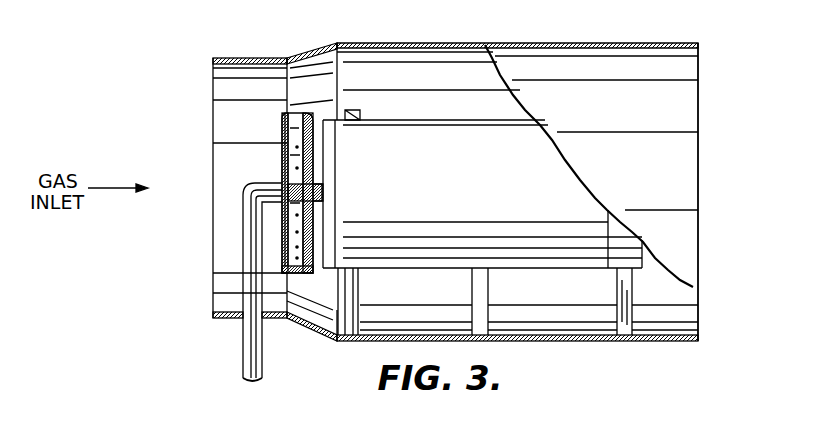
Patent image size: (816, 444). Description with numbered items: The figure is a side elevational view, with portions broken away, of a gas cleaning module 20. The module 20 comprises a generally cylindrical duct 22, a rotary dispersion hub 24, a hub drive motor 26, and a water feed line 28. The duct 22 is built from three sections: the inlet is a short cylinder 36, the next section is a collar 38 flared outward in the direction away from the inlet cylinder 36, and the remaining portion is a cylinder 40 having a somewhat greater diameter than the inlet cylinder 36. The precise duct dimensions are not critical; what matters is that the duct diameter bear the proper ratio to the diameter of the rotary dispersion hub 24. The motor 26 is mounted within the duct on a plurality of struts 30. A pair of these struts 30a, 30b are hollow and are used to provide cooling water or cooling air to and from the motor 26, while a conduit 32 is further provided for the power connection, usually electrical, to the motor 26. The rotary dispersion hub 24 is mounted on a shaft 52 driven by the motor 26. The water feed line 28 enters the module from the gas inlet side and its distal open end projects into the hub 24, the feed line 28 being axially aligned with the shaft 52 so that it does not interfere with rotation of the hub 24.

The gas cleaning module 20 is at (605, 35).
The cylindrical duct 22 is at (683, 190).
The rotary dispersion hub 24 is at (284, 135).
The hub drive motor 26 is at (563, 257).
The water feed line 28 is at (243, 250).
The struts 30 is at (362, 111).
The hollow strut 30a is at (348, 342).
The hollow strut 30b is at (627, 342).
The conduit 32 is at (485, 324).
The inlet cylinder 36 is at (230, 78).
The collar 38 is at (320, 50).
The cylinder 40 is at (445, 42).
The shaft 52 is at (282, 170).